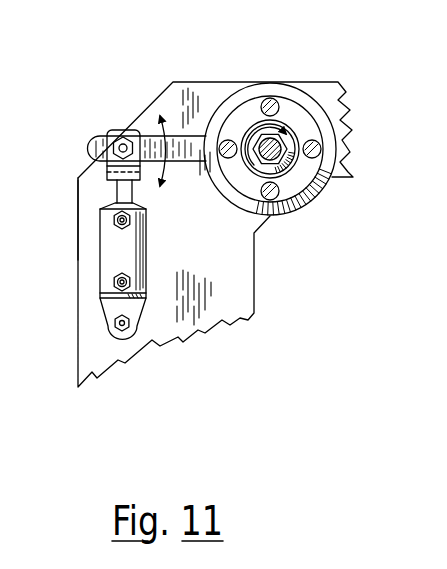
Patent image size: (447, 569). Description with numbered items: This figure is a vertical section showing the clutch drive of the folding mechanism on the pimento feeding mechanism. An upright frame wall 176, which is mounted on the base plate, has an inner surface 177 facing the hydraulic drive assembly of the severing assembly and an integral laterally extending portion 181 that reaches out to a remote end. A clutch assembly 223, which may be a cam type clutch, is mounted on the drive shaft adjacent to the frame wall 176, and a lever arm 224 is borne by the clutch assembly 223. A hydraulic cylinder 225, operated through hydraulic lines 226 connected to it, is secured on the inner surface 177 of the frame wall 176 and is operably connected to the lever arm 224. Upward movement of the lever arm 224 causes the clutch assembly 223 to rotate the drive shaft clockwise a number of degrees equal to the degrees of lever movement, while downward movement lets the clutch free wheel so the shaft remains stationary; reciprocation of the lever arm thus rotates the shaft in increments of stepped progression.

The frame wall 176 is at (78, 186).
The inner surface 177 is at (212, 219).
The laterally extending portion 181 is at (330, 90).
The clutch assembly 223 is at (207, 100).
The lever arm 224 is at (88, 139).
The hydraulic cylinder 225 is at (100, 255).
The hydraulic lines 226 is at (130, 280).